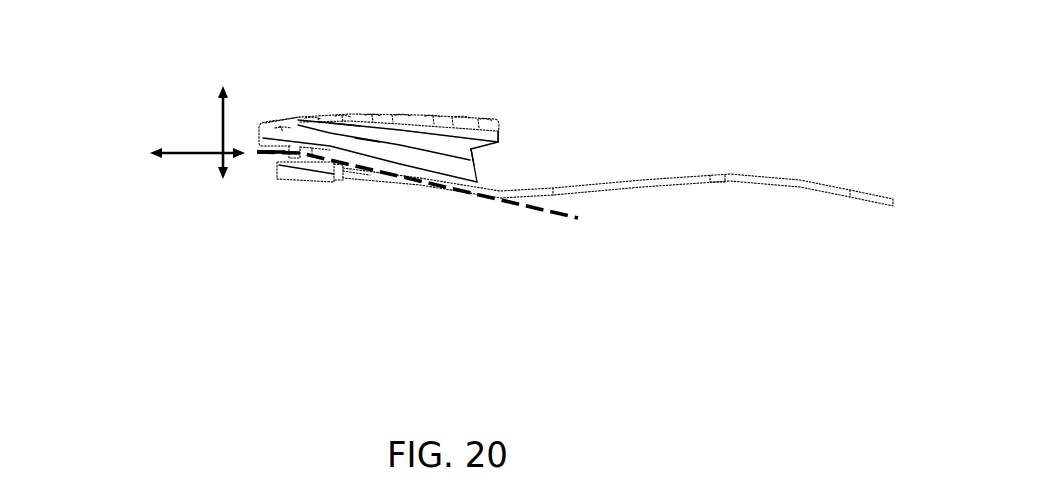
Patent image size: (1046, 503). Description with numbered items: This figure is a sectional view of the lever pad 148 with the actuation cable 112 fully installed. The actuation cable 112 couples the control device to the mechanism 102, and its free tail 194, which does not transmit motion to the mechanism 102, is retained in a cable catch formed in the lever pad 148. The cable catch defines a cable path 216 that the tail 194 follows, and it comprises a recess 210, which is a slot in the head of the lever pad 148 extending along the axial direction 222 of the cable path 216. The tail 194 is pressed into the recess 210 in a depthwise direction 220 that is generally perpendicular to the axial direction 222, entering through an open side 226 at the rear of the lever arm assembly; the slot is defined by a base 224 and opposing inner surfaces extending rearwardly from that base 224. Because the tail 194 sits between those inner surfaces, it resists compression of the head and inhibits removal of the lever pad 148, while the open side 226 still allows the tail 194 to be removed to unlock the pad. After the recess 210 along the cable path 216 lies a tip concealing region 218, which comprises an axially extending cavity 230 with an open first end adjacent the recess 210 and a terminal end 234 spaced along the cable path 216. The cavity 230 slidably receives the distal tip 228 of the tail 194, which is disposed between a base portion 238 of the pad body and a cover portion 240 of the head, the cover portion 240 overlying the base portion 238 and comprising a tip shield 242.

The mechanism 102 is at (506, 127).
The actuation cable 112 is at (618, 221).
The lever pad 148 is at (435, 147).
The tail 194 is at (642, 191).
The recess 210 is at (353, 172).
The cable path 216 is at (275, 153).
The tip concealing region 218 is at (288, 147).
The depthwise direction 220 is at (222, 118).
The axial direction 222 is at (175, 153).
The base 224 is at (368, 145).
The open side 226 is at (379, 197).
The distal tip 228 is at (322, 150).
The cavity 230 is at (302, 150).
The terminal end 234 is at (262, 162).
The base portion 238 is at (345, 135).
The cover portion 240 is at (307, 216).
The tip shield 242 is at (302, 175).